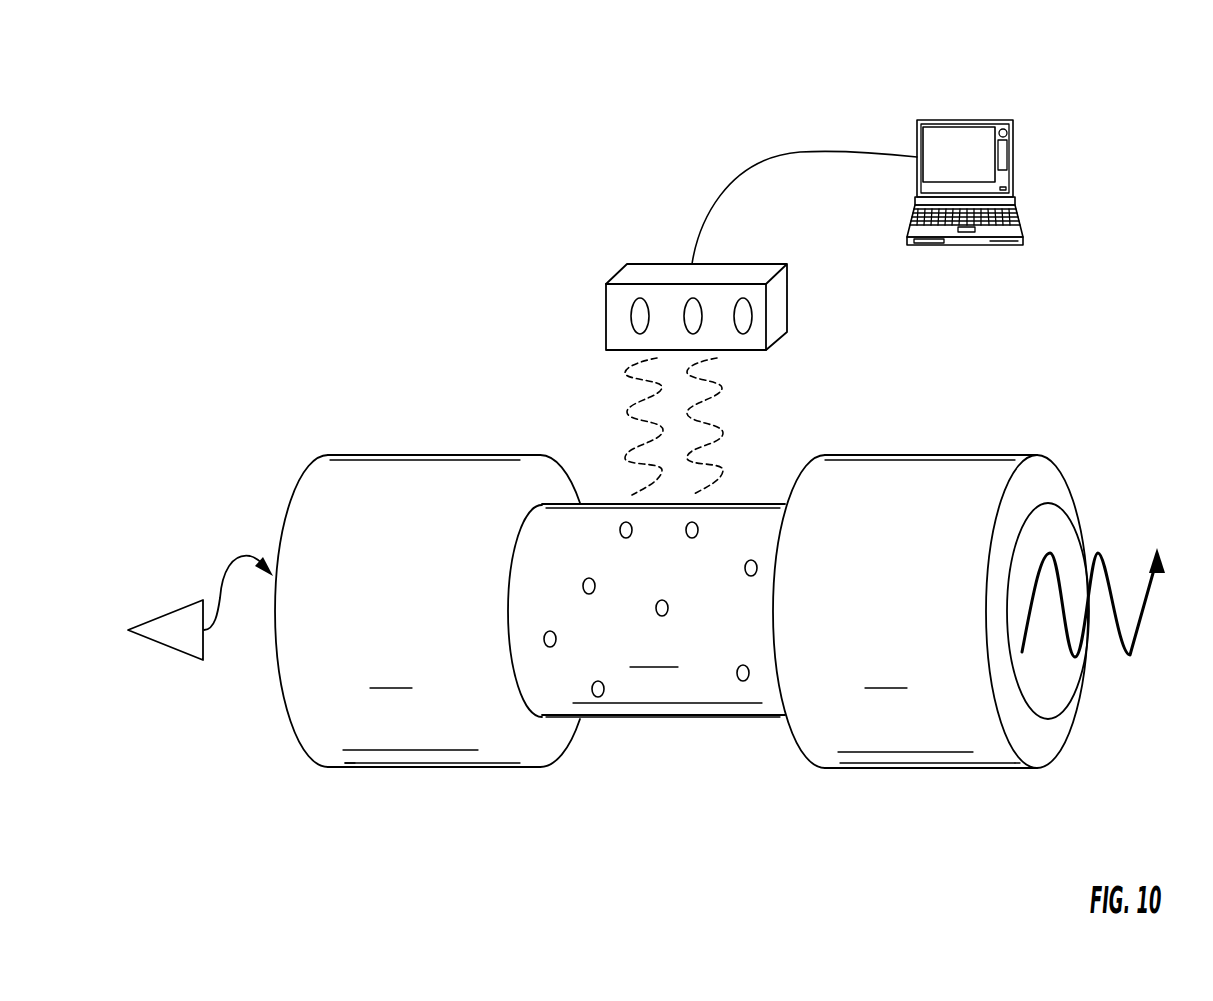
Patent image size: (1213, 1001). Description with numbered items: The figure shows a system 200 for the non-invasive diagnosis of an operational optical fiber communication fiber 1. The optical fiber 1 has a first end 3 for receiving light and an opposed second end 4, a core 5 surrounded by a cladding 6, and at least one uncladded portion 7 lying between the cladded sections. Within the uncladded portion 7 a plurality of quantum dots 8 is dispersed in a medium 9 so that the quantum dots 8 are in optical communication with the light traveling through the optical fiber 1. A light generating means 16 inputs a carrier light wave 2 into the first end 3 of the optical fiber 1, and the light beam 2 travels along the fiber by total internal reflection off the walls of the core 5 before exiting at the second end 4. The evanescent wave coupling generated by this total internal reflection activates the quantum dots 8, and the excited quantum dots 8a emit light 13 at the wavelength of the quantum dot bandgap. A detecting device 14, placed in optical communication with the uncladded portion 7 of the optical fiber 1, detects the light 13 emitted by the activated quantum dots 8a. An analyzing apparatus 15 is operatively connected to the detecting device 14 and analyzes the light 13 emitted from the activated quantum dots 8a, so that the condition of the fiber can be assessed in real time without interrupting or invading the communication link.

The optical fiber 1 is at (1072, 838).
The light beam 2 is at (1123, 665).
The first end 3 is at (283, 510).
The second end 4 is at (1115, 697).
The core 5 is at (1060, 540).
The cladding 6 is at (436, 738).
The uncladded portion 7 is at (547, 778).
The quantum dots 8 is at (602, 690).
The excited quantum dots 8a is at (696, 522).
The medium 9 is at (700, 632).
The emitted light 13 is at (630, 413).
The detecting device 14 is at (625, 270).
The analyzing apparatus 15 is at (948, 118).
The light generating means 16 is at (181, 607).
The system 200 is at (523, 82).